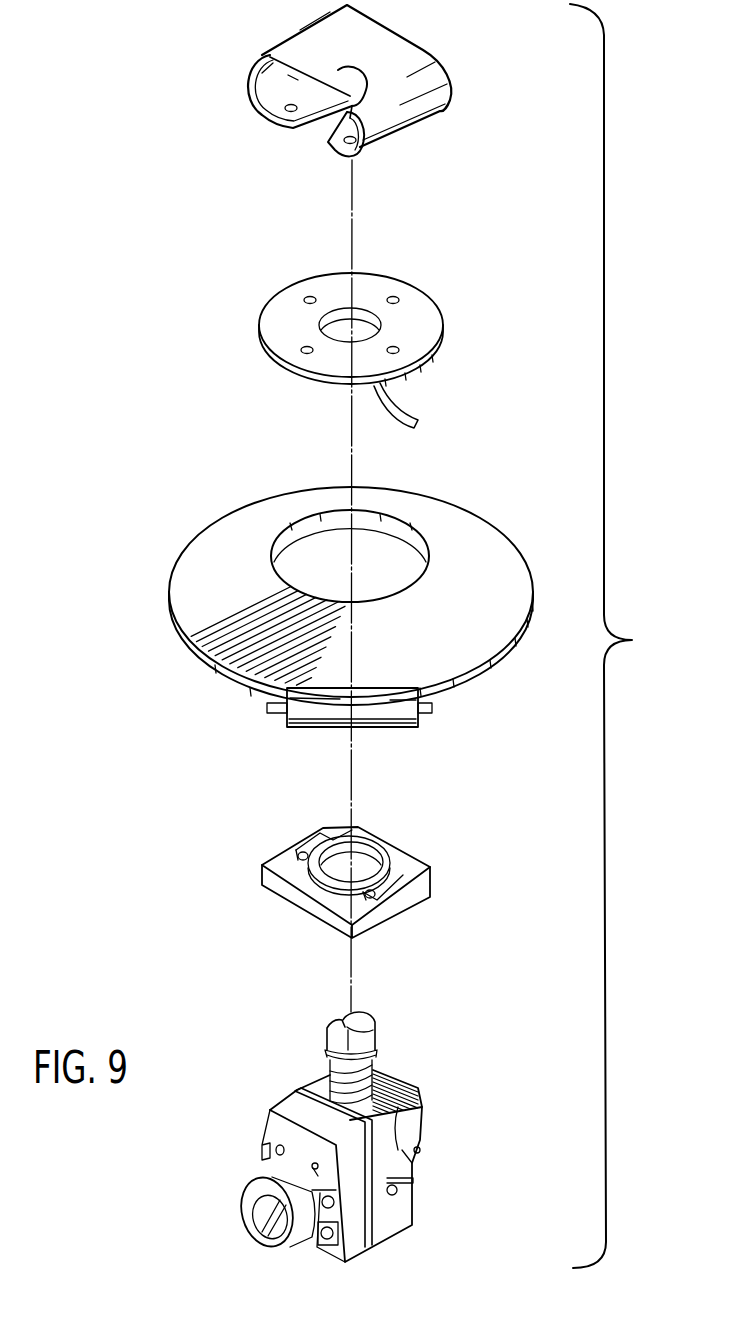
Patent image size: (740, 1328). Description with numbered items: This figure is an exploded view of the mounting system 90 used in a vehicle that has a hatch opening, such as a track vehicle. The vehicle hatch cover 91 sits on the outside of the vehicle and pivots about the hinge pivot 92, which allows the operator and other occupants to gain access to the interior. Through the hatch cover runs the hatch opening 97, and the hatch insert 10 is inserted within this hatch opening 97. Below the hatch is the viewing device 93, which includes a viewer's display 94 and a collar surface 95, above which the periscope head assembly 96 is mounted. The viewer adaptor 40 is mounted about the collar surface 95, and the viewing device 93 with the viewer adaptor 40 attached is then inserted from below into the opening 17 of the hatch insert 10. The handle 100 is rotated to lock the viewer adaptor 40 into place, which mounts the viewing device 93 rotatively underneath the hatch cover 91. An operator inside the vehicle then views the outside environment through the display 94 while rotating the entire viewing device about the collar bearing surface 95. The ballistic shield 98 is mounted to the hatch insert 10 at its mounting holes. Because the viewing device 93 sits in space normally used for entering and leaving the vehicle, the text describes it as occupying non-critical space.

The hatch insert 10 is at (366, 350).
The opening 17 is at (332, 326).
The viewer adaptor 40 is at (435, 889).
The mounting system 90 is at (684, 661).
The vehicle hatch cover 91 is at (311, 628).
The hinge pivot 92 is at (310, 708).
The viewing device 93 is at (350, 1130).
The viewer's display 94 is at (253, 1212).
The collar surface 95 is at (366, 1070).
The periscope head assembly 96 is at (373, 1034).
The hatch opening 97 is at (410, 548).
The ballistic shield 98 is at (441, 47).
The handle 100 is at (402, 405).